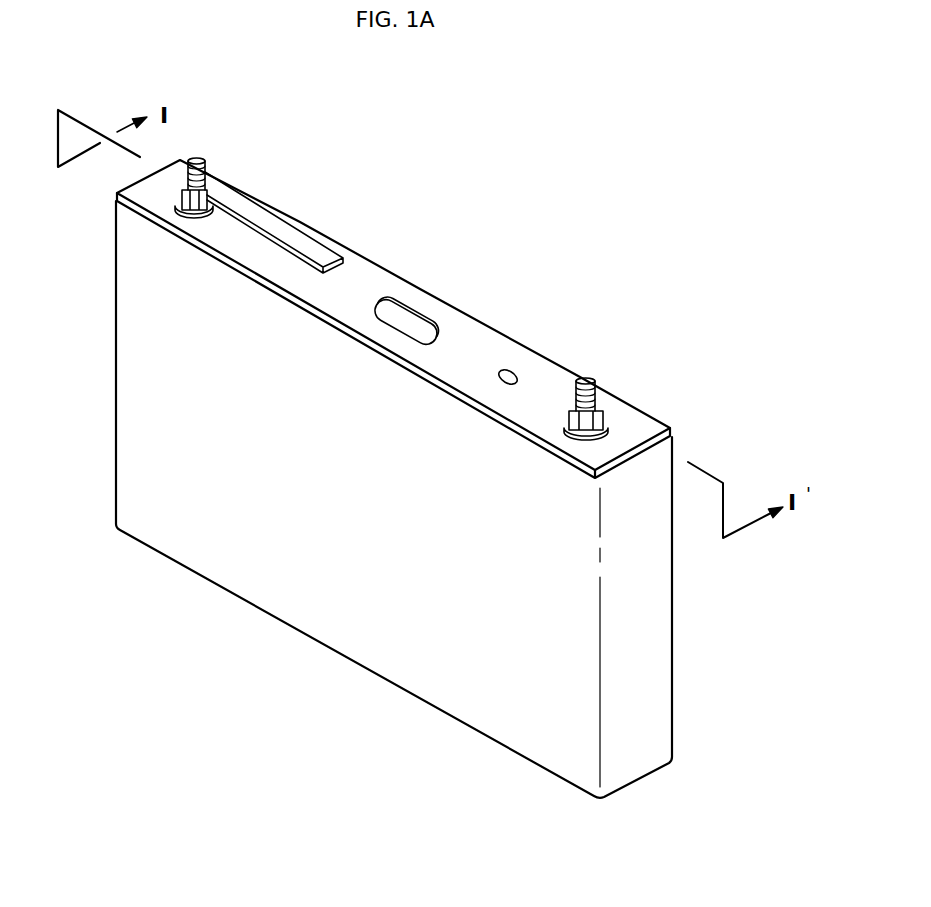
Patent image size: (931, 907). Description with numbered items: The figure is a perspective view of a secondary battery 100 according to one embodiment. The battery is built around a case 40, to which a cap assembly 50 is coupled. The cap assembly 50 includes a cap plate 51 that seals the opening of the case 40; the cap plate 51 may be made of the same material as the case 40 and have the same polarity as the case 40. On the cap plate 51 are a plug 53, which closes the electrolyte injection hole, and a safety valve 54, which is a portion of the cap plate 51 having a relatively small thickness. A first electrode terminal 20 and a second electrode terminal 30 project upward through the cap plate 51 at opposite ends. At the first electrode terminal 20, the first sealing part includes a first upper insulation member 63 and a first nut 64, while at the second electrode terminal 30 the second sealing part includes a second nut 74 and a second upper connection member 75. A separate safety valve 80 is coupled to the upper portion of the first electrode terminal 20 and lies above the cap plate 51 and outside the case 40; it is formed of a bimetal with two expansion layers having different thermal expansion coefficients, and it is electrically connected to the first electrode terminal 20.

The secondary battery 100 is at (446, 134).
The first electrode terminal 20 is at (197, 158).
The second electrode terminal 30 is at (588, 375).
The case 40 is at (337, 636).
The cap assembly 50 is at (500, 321).
The cap plate 51 is at (372, 272).
The plug 53 is at (515, 377).
The safety valve 54 is at (417, 327).
The first upper insulation member 63 is at (177, 208).
The first nut 64 is at (179, 199).
The second nut 74 is at (604, 412).
The second upper connection member 75 is at (608, 423).
The safety valve 80 is at (298, 237).